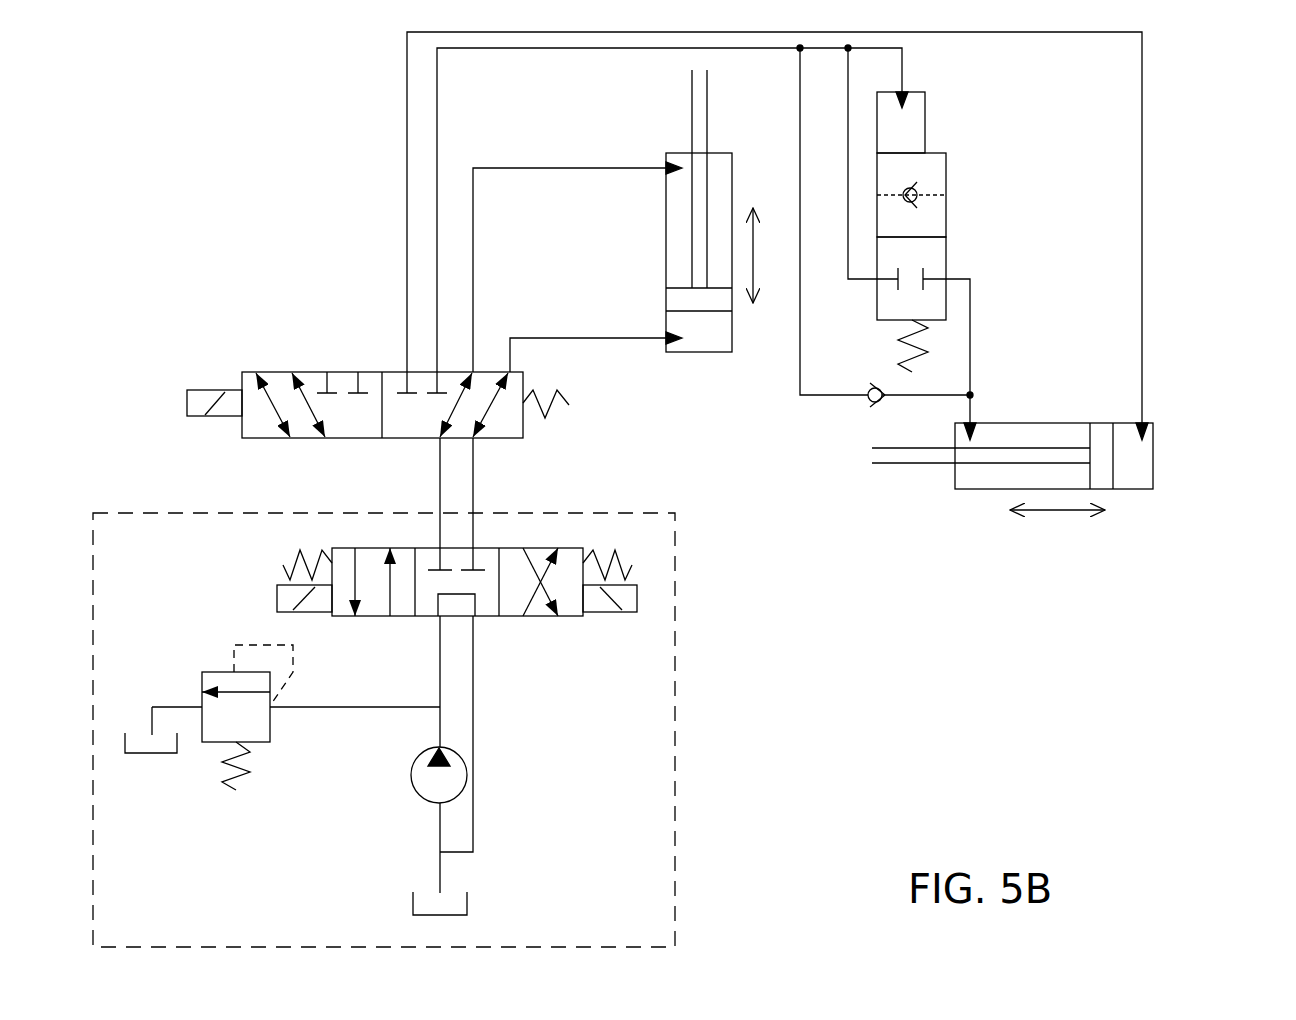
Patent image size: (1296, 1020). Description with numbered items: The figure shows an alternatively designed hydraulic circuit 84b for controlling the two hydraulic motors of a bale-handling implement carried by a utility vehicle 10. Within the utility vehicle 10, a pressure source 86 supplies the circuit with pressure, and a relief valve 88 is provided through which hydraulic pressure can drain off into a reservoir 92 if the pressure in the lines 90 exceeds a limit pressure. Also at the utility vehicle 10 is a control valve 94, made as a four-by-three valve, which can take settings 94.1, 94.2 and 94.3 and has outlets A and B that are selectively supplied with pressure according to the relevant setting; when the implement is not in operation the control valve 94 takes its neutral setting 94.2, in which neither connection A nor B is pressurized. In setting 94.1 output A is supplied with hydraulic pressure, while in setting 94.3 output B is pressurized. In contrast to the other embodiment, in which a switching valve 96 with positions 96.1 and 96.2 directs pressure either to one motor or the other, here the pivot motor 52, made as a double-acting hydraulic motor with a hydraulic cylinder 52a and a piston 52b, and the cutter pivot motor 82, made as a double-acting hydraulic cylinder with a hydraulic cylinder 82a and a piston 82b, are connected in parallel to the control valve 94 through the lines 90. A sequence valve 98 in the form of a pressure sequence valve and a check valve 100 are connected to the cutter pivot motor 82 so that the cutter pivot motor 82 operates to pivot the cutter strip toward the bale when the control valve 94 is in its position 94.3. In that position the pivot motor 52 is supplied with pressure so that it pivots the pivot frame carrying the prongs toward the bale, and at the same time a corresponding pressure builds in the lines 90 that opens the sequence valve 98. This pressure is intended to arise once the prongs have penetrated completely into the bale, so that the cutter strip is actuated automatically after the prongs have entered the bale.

The utility vehicle 10 is at (677, 592).
The pivot motor 52 is at (639, 254).
The hydraulic cylinder 52a is at (707, 353).
The piston 52b is at (692, 110).
The cutter pivot motor 82 is at (1078, 473).
The hydraulic cylinder 82a is at (1140, 490).
The piston 82b is at (912, 465).
The hydraulic circuit 84b is at (890, 645).
The pressure source 86 is at (412, 782).
The relief valve 88 is at (210, 756).
The lines 90 is at (800, 132).
The reservoir 92 is at (137, 755).
The control valve 94 is at (457, 636).
The setting of control valve 94.1 is at (345, 617).
The neutral setting of control valve 94.2 is at (457, 548).
The setting of control valve 94.3 is at (570, 617).
The switching valve 96 is at (376, 381).
The position of switching valve 96.1 is at (523, 438).
The position of switching valve 96.2 is at (243, 372).
The sequence valve 98 is at (975, 143).
The check valve 100 is at (870, 415).